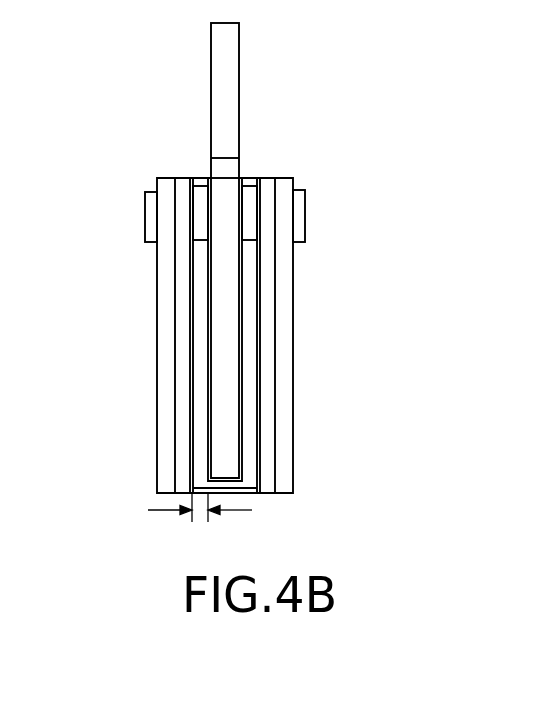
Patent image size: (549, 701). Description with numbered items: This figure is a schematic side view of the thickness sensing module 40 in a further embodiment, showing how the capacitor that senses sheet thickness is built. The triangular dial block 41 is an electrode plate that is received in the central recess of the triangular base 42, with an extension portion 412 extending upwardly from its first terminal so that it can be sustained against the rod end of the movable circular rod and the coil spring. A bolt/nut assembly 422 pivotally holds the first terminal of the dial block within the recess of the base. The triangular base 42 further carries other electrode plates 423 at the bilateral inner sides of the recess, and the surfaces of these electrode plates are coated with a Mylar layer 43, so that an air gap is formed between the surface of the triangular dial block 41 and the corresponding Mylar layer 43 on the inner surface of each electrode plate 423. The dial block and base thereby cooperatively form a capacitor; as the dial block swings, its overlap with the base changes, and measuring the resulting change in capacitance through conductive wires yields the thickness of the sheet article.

The connector assembly 40 is at (437, 67).
The triangular dial block 41 is at (223, 428).
The extension portion 412 is at (225, 107).
The triangular base 42 is at (165, 392).
The bolt/nut assembly 422 is at (200, 193).
The electrode plate 423 is at (182, 192).
The Mylar layer 43 is at (192, 252).